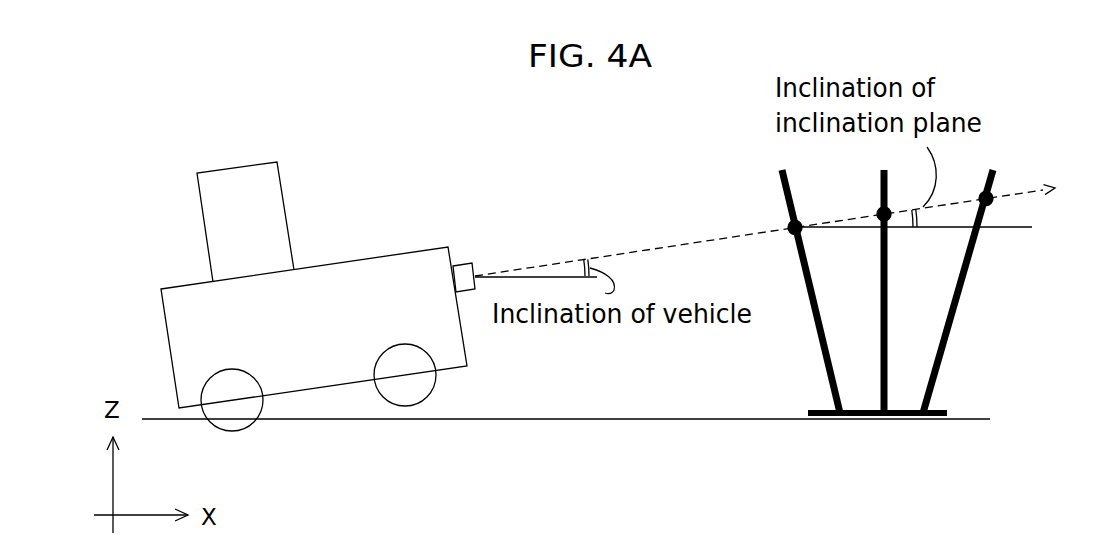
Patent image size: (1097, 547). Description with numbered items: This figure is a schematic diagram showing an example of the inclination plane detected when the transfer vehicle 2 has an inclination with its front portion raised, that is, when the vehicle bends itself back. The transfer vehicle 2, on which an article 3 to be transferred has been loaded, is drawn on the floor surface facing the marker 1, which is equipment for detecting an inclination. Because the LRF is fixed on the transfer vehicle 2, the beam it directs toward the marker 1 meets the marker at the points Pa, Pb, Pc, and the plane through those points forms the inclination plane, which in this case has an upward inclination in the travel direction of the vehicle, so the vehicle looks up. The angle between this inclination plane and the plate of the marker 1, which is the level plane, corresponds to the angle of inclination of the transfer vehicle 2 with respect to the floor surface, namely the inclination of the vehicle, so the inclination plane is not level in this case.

The marker 1 is at (859, 418).
The transfer vehicle 2 is at (415, 250).
The article 3 is at (278, 162).
The measurement point Pa is at (776, 216).
The measurement point Pb is at (867, 200).
The measurement point Pc is at (970, 187).